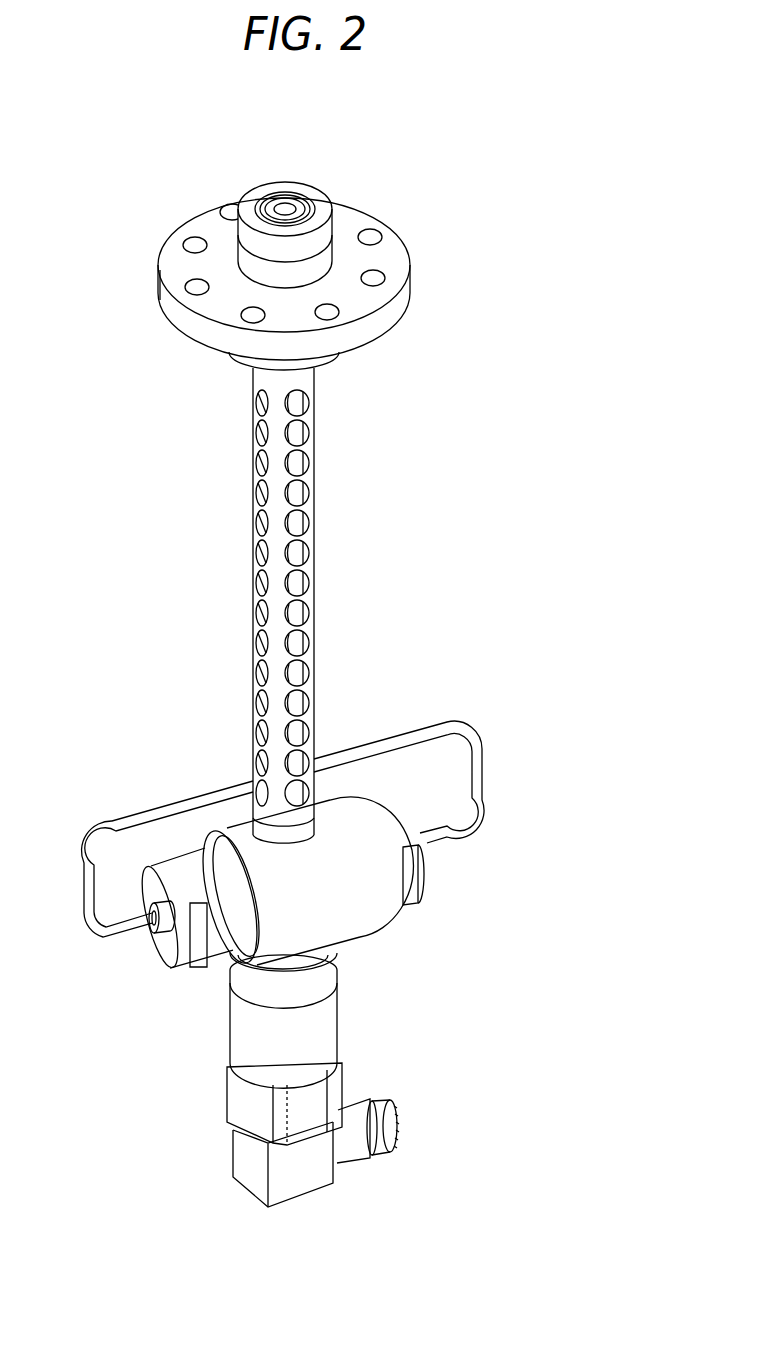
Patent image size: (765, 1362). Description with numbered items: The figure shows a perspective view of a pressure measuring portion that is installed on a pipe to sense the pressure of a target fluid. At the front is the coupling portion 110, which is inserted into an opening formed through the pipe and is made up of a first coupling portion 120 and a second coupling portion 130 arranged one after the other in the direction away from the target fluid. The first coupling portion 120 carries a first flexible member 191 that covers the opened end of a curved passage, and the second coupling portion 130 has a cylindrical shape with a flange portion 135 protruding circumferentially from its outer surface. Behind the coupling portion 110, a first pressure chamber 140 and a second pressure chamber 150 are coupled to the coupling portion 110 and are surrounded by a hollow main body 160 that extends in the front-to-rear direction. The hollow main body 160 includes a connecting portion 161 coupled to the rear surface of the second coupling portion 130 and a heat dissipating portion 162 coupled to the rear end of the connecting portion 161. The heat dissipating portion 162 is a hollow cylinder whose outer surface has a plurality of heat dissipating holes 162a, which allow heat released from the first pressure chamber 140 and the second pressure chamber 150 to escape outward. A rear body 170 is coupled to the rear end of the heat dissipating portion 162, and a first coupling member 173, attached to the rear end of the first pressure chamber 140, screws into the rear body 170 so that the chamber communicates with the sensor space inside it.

The connector 110 is at (308, 251).
The boss 120 is at (329, 215).
The flange 130 is at (422, 284).
The flange rim 135 is at (172, 305).
The through hole 191 is at (258, 207).
The inflow pipe assembly 160 is at (342, 597).
The pipe hub 161 is at (323, 368).
The perforated pipe 162 is at (310, 473).
The pipe holes 162a is at (307, 553).
The left handle 140 is at (150, 802).
The right handle 150 is at (390, 736).
The knob 173 is at (160, 935).
The sensor unit 170 is at (354, 1025).